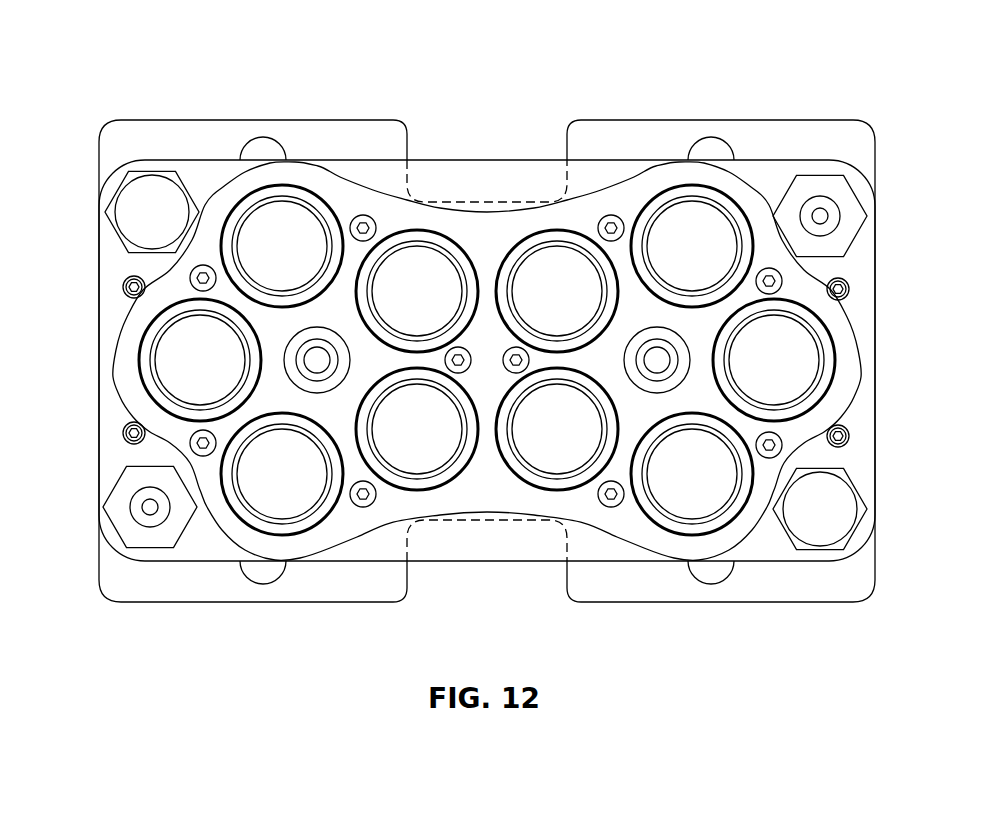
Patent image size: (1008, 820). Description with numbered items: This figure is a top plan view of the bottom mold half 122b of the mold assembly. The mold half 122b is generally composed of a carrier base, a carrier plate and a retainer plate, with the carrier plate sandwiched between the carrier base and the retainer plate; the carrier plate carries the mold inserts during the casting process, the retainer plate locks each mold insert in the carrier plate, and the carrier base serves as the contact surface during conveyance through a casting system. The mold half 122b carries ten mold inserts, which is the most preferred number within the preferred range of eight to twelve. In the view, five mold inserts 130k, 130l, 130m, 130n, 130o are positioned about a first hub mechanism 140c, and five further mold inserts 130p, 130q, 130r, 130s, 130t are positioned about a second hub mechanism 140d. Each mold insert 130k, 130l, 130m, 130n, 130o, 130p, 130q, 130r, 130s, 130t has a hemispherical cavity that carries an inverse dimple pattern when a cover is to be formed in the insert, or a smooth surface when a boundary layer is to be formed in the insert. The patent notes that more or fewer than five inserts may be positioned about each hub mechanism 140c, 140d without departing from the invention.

The mold half 122b is at (212, 63).
The mold insert 130k is at (300, 213).
The mold insert 130l is at (432, 257).
The mold insert 130m is at (430, 463).
The mold insert 130n is at (300, 503).
The mold insert 130o is at (163, 358).
The mold insert 130p is at (541, 258).
The mold insert 130q is at (722, 227).
The mold insert 130r is at (807, 370).
The mold insert 130s is at (717, 498).
The mold insert 130t is at (545, 463).
The hub mechanism 140c is at (282, 445).
The hub mechanism 140d is at (672, 277).